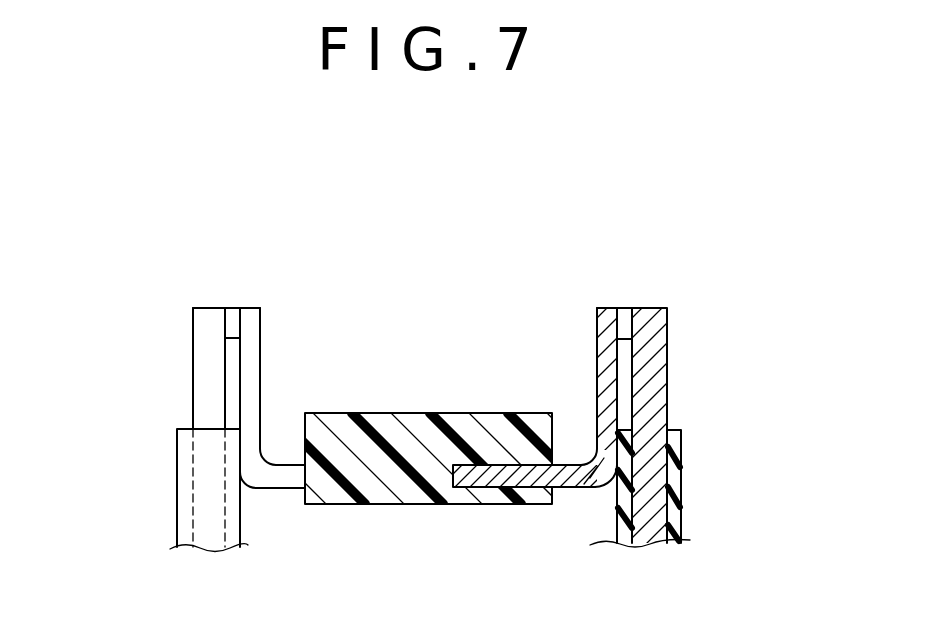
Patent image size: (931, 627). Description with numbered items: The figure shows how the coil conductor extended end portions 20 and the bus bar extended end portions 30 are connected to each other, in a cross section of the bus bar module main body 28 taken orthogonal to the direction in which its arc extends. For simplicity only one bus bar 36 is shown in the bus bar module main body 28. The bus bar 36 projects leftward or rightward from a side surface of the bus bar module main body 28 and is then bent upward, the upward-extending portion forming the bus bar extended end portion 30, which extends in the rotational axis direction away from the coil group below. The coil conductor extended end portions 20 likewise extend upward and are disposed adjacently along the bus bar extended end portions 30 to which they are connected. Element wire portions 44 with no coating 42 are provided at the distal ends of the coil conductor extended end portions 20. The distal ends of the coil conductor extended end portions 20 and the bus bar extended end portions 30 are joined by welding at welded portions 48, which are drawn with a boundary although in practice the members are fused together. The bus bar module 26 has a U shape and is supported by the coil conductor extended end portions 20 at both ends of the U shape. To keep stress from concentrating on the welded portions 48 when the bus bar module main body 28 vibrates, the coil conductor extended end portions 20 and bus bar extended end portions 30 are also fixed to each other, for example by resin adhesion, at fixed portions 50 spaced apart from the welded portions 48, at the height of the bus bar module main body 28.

The coil conductor extended end portion 20 is at (184, 345).
The bus bar module 26 is at (177, 475).
The bus bar module main body 28 is at (385, 413).
The bus bar extended end portion 30 is at (260, 355).
The bus bar 36 is at (282, 490).
The coating 42 is at (682, 476).
The element wire portion 44 is at (193, 397).
The welded portion 48 is at (233, 307).
The fixed portion 50 is at (230, 450).